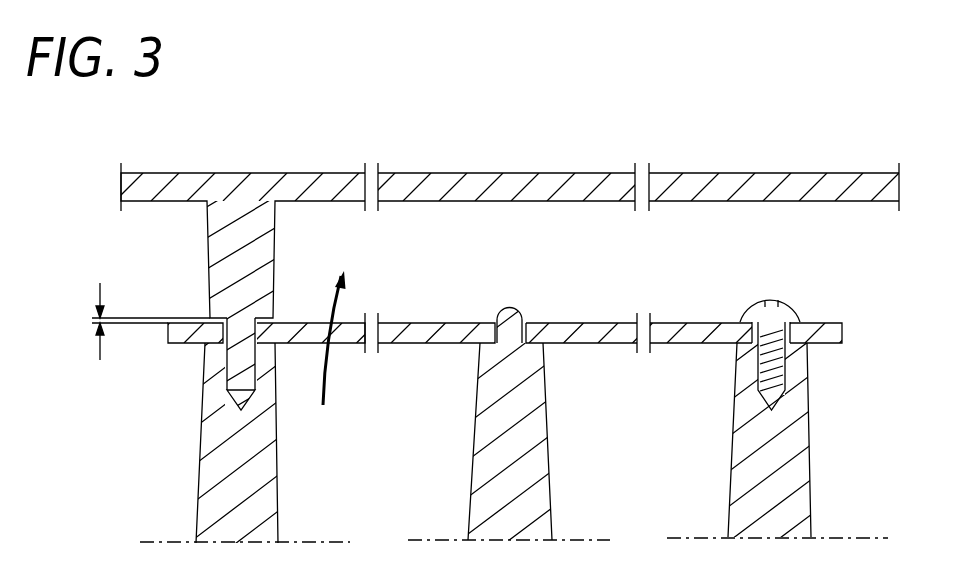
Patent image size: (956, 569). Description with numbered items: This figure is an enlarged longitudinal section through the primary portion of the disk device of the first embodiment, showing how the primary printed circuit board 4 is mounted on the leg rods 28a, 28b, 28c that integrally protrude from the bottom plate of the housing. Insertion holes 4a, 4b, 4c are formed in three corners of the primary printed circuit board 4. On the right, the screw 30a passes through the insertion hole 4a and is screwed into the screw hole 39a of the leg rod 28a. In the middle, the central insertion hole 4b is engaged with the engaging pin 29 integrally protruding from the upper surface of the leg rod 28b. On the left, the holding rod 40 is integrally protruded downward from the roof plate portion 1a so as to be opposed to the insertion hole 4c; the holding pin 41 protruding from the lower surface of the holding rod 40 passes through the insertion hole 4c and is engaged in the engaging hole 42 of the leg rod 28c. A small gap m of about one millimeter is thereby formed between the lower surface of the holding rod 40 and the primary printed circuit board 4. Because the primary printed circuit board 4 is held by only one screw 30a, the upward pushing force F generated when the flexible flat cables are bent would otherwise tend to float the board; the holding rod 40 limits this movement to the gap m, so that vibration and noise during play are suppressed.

The roof plate portion 1a is at (478, 178).
The holding rod 40 is at (211, 249).
The holding pin 41 is at (255, 322).
The engaging hole 42 is at (253, 391).
The primary printed circuit board 4 is at (677, 333).
The insertion hole 4a is at (814, 326).
The central insertion hole 4b is at (545, 345).
The insertion hole 4c is at (205, 346).
The engaging pin 29 is at (510, 312).
The leg rod 28a is at (795, 490).
The leg rod 28b is at (533, 497).
The leg rod 28c is at (258, 505).
The screw 30a is at (775, 300).
The screw hole 39a is at (767, 385).
The small gap m is at (80, 322).
The upward pushing force F is at (344, 338).